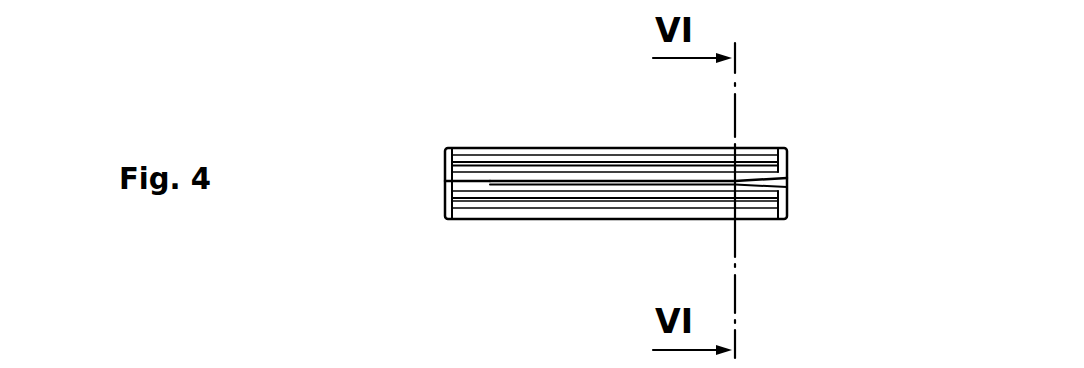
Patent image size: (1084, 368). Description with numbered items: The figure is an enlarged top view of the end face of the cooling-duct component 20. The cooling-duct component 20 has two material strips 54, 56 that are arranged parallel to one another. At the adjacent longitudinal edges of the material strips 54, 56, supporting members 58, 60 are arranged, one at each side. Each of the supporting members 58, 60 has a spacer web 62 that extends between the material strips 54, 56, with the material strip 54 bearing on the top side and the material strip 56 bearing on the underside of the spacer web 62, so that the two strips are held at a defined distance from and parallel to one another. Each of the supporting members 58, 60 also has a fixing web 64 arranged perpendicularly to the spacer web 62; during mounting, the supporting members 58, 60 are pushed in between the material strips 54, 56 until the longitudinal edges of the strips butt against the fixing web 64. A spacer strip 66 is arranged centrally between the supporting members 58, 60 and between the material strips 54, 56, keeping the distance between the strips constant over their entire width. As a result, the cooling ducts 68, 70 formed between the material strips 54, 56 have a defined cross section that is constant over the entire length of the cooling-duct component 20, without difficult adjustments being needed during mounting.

The cooling-duct component 20 is at (619, 181).
The material strip 54 is at (555, 175).
The material strip 56 is at (512, 193).
The supporting member 58 is at (432, 182).
The supporting member 60 is at (805, 174).
The spacer web 62 is at (474, 165).
The fixing web 64 is at (790, 187).
The spacer strip 66 is at (621, 182).
The cooling duct 68 is at (572, 186).
The cooling duct 70 is at (682, 191).